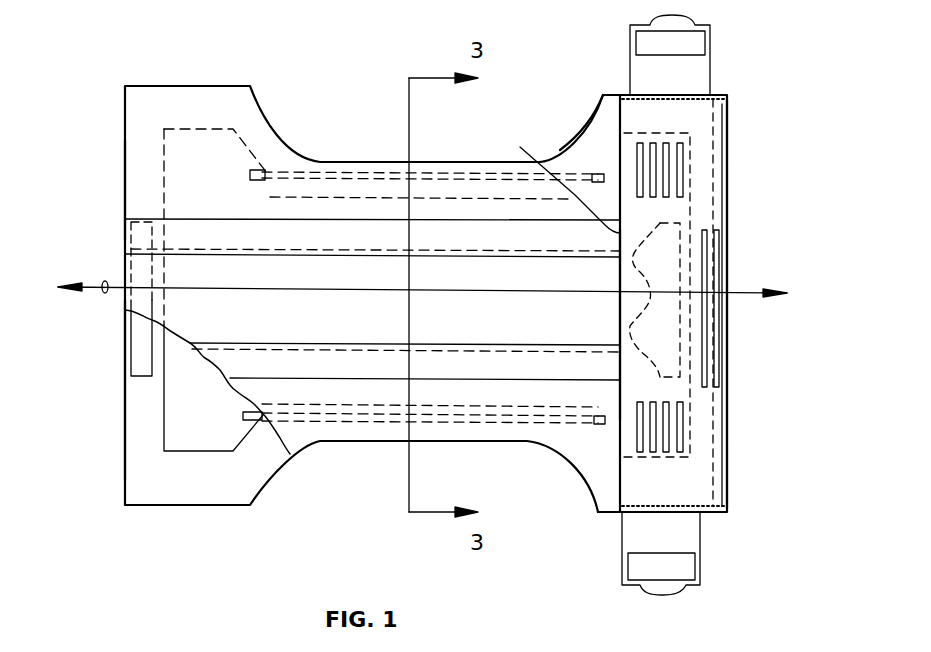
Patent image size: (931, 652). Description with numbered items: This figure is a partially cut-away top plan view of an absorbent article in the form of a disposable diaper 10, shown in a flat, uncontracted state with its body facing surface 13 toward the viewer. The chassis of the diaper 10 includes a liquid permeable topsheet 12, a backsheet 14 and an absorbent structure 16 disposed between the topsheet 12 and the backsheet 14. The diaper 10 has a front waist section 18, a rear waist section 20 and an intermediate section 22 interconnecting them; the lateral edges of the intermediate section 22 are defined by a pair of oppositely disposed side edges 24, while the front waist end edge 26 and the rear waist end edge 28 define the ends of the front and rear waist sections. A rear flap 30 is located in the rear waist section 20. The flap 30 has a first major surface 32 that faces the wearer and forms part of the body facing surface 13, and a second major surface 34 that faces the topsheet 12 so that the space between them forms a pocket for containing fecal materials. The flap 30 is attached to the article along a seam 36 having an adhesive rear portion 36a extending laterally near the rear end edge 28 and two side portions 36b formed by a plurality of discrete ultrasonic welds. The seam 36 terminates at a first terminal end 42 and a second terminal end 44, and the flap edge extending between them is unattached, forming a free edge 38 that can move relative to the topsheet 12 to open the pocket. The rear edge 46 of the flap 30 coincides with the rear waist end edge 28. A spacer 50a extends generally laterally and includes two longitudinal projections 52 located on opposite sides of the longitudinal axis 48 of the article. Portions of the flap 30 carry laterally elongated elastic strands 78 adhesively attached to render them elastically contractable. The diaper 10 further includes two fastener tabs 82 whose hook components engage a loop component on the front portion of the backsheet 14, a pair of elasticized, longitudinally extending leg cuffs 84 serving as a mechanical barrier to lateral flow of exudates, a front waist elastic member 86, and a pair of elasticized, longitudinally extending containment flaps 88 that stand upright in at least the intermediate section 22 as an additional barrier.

The disposable diaper 10 is at (236, 530).
The topsheet 12 is at (180, 178).
The body facing surface 13 is at (342, 350).
The backsheet 14 is at (135, 462).
The absorbent structure 16 is at (178, 423).
The front waist section 18 is at (187, 152).
The rear waist section 20 is at (700, 398).
The intermediate section 22 is at (345, 258).
The side edges 24 is at (462, 162).
The front waist end edge 26 is at (125, 186).
The rear waist end edge 28 is at (733, 186).
The rear flap 30 is at (698, 214).
The first major surface 32 is at (600, 421).
The second major surface 34 is at (556, 177).
The seam 36 is at (733, 112).
The rear portion of seam 36a is at (725, 456).
The side portions of seam 36b is at (700, 97).
The free edge 38 is at (622, 272).
The first terminal end 42 is at (608, 96).
The second terminal end 44 is at (606, 518).
The rear edge of flap 46 is at (728, 350).
The longitudinal axis 48 is at (105, 281).
The spacer 50a is at (692, 322).
The longitudinal projections 52 is at (628, 292).
The elastic strands 78 is at (647, 178).
The fastener tabs 82 is at (714, 30).
The leg cuffs 84 is at (374, 180).
The front waist elastic member 86 is at (140, 345).
The containment flaps 88 is at (236, 226).